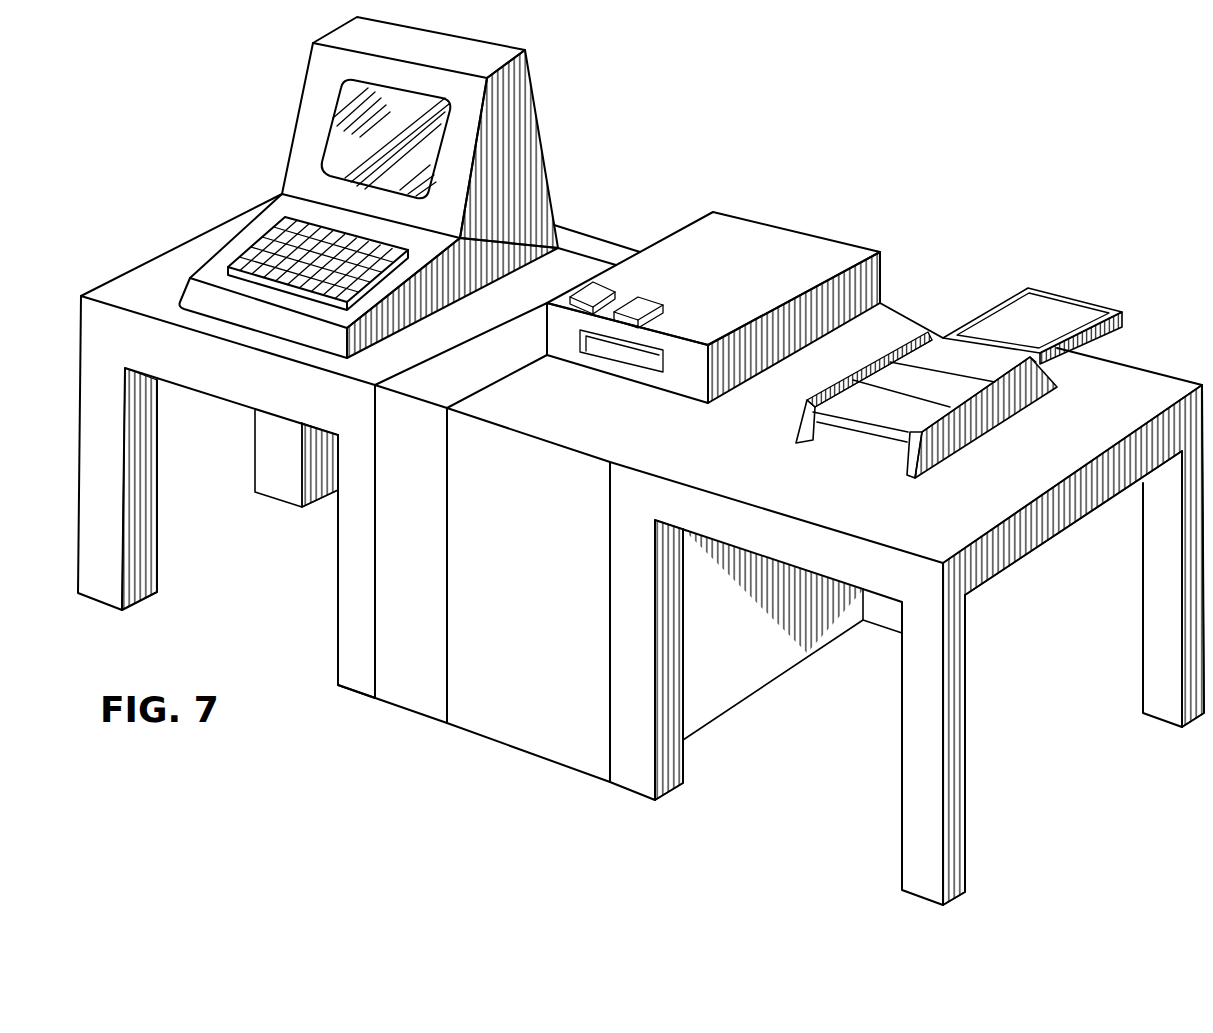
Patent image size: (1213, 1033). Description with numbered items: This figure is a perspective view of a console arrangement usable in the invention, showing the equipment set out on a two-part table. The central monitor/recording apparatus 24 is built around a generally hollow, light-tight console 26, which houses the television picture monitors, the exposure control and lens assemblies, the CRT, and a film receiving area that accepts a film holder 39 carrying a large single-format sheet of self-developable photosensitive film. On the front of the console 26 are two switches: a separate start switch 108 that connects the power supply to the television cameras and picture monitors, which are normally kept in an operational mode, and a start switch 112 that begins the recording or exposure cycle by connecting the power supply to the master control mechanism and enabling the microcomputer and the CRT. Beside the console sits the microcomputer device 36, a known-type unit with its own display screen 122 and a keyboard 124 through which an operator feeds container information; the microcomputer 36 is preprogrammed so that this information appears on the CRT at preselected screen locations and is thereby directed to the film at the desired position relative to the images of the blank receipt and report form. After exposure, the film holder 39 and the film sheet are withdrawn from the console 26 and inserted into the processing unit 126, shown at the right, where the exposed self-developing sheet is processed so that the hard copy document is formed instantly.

The central monitor/recording apparatus 24 is at (713, 272).
The light-tight console 26 is at (767, 273).
The microcomputer device 36 is at (369, 187).
The film holder 39 is at (1077, 306).
The start switch 108 is at (652, 298).
The start switch 112 is at (607, 287).
The display screen 122 is at (350, 133).
The keyboard 124 is at (272, 253).
The processing unit 126 is at (928, 337).